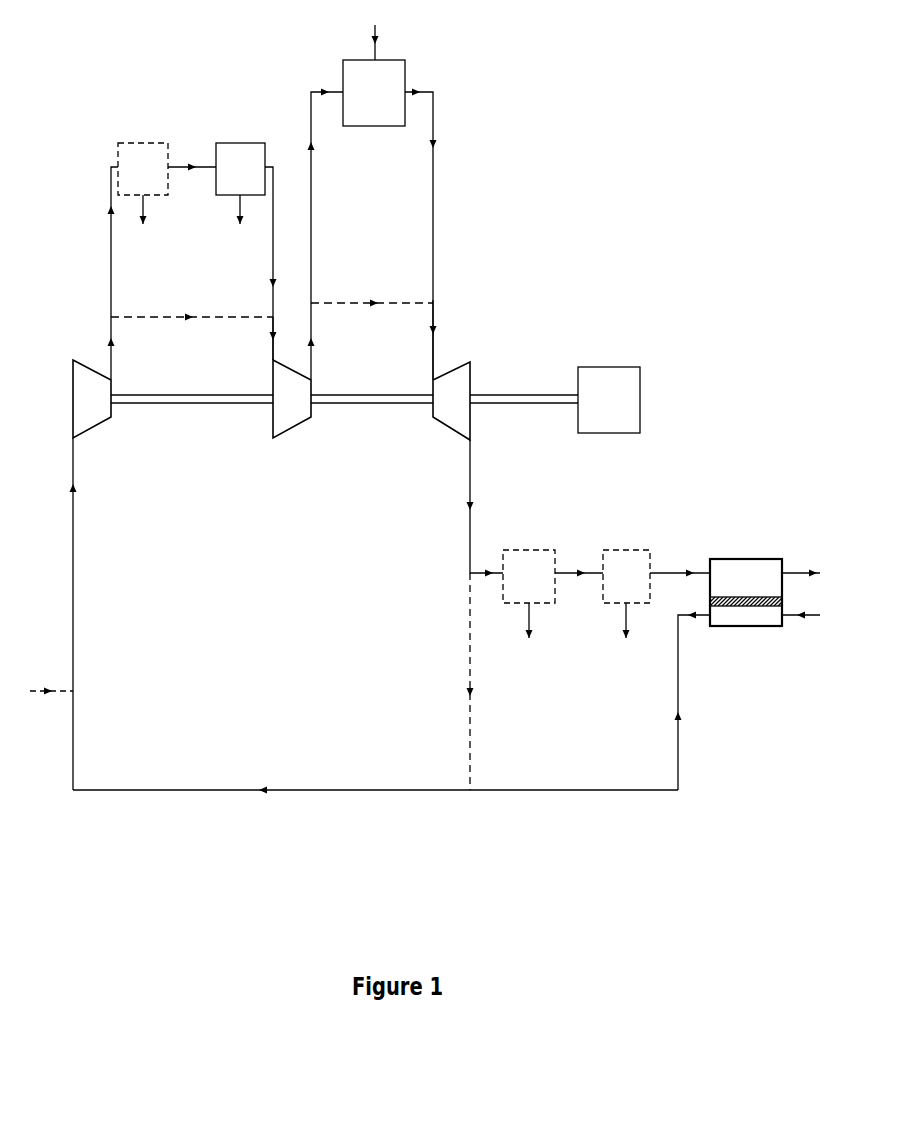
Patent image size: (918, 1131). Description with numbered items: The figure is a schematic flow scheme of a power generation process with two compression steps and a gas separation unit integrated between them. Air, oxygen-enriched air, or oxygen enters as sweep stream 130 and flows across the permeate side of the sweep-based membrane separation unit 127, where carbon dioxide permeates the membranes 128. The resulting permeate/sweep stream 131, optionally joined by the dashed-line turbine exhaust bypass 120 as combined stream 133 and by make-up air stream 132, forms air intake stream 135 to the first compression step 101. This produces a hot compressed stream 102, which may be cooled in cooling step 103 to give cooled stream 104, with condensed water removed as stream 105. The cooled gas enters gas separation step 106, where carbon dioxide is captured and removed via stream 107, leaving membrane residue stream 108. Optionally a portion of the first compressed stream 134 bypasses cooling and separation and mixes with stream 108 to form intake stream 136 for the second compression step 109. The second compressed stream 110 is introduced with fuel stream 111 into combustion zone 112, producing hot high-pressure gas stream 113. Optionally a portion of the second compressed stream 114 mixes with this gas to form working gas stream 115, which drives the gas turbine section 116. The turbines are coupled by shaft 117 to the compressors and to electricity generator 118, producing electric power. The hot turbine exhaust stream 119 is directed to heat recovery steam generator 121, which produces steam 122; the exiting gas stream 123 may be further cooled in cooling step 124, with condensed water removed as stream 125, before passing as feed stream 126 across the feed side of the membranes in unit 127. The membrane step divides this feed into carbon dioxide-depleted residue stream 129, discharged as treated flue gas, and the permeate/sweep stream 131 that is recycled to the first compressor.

The first compression step 101 is at (73, 364).
The compressed stream 102 is at (99, 273).
The cooling step 103 is at (141, 143).
The cooled stream 104 is at (192, 158).
The condensed water stream 105 is at (143, 222).
The gas separation step 106 is at (238, 143).
The carbon dioxide stream 107 is at (241, 222).
The membrane residue stream 108 is at (260, 263).
The second compression step 109 is at (293, 433).
The second compressed stream 110 is at (327, 235).
The fuel stream 111 is at (376, 35).
The combustion step or zone 112 is at (405, 70).
The hot high-pressure gas stream 113 is at (437, 235).
The portion of second compressed stream 114 is at (372, 318).
The working gas stream 115 is at (450, 340).
The gas turbine section 116 is at (443, 432).
The shaft 117 is at (530, 395).
The electricity generator 118 is at (612, 367).
The turbine exhaust gas stream 119 is at (470, 508).
The second portion of turbine exhaust 120 is at (455, 681).
The heat recovery steam generator 121 is at (526, 550).
The steam 122 is at (531, 633).
The steam generator exit gas stream 123 is at (579, 565).
The cooling step 124 is at (624, 550).
The condensed water stream 125 is at (626, 633).
The feed stream 126 is at (680, 565).
The sweep-based membrane separation unit 127 is at (748, 559).
The membranes 128 is at (710, 601).
The residue stream 129 is at (817, 575).
The sweep stream 130 is at (817, 617).
The permeate/sweep stream 131 is at (695, 701).
The make-up air stream 132 is at (51, 682).
The combined recycle stream 133 is at (375, 779).
The portion of first compressed stream 134 is at (192, 328).
The air intake stream 135 is at (91, 614).
The second air intake stream 136 is at (258, 338).